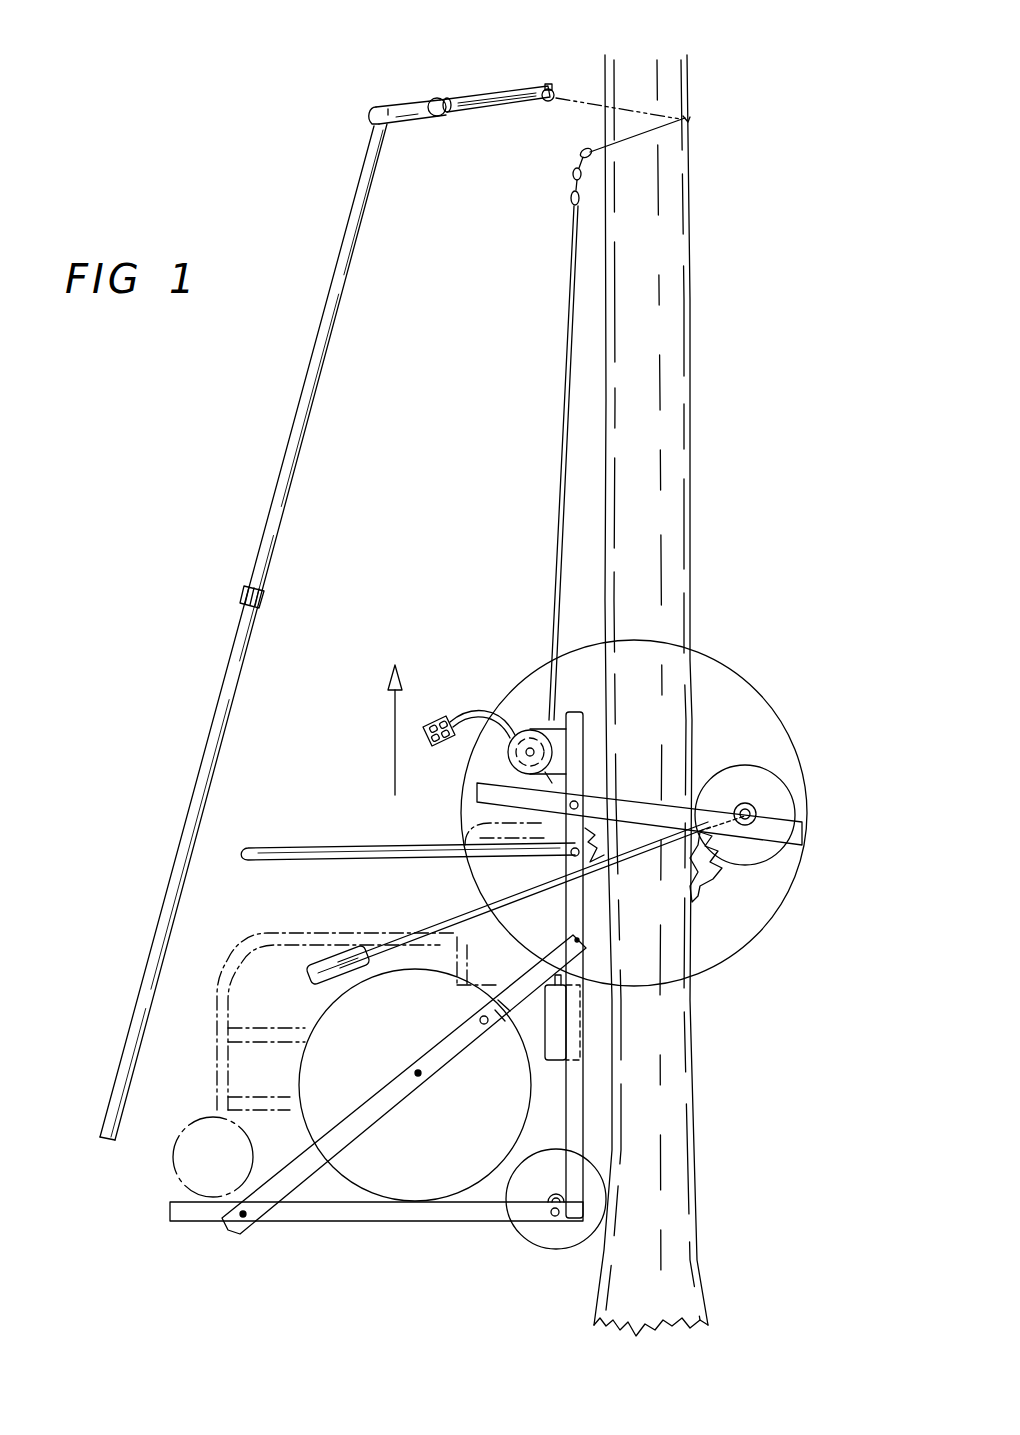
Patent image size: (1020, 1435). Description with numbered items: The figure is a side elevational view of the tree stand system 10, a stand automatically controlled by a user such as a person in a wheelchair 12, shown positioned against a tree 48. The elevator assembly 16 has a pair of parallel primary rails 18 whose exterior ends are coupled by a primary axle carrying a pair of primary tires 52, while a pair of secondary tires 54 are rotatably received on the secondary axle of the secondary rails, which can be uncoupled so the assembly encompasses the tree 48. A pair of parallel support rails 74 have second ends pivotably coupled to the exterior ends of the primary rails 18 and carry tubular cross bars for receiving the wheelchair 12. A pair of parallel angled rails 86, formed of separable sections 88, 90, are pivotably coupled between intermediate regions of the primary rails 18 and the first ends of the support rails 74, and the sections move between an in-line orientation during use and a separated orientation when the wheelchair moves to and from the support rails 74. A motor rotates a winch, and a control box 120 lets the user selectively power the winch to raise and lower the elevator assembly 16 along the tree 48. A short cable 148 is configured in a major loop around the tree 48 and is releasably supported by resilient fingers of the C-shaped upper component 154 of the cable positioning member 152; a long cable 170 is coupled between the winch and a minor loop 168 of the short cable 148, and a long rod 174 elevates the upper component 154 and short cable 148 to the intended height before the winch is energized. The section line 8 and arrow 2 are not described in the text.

The direction of rotation arrow 2 is at (767, 703).
The section line 8- 8 is at (291, 58).
The tree stand system 10 is at (712, 648).
The wheelchair 12 is at (215, 975).
The elevator assembly 16 is at (527, 729).
The primary rails 18 is at (578, 1124).
The tree 48 is at (688, 257).
The primary tires 52 is at (556, 1224).
The secondary tires 54 is at (775, 792).
The support rails 74 is at (375, 1222).
The angled rails 86 is at (290, 1178).
The separable section 88 is at (375, 1106).
The separable section 90 is at (528, 992).
The control box 120 is at (440, 718).
The short cable 148 is at (688, 127).
The cable positioning member 152 is at (266, 522).
The C-shaped upper component 154 is at (420, 103).
The minor loop 168 is at (573, 176).
The long cable 170 is at (575, 236).
The long rod 174 is at (265, 577).